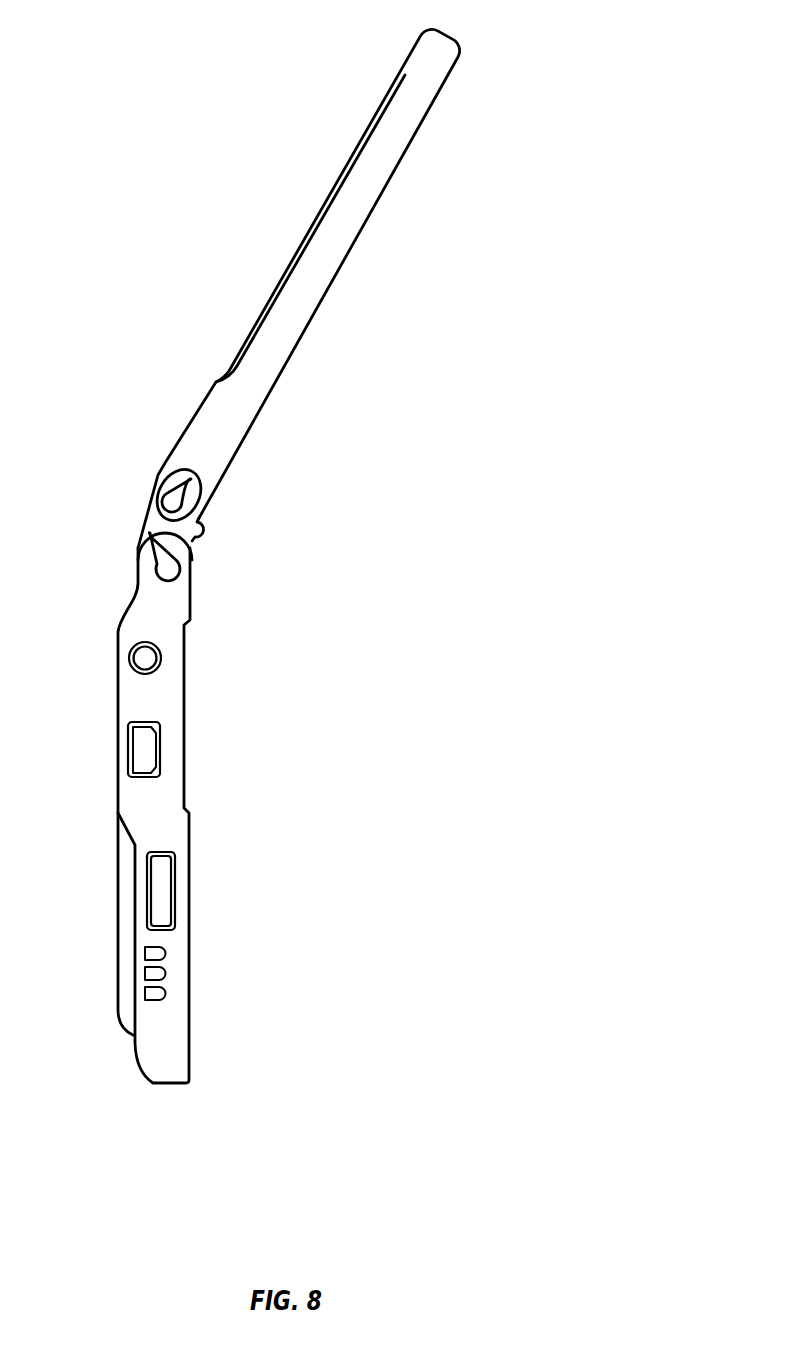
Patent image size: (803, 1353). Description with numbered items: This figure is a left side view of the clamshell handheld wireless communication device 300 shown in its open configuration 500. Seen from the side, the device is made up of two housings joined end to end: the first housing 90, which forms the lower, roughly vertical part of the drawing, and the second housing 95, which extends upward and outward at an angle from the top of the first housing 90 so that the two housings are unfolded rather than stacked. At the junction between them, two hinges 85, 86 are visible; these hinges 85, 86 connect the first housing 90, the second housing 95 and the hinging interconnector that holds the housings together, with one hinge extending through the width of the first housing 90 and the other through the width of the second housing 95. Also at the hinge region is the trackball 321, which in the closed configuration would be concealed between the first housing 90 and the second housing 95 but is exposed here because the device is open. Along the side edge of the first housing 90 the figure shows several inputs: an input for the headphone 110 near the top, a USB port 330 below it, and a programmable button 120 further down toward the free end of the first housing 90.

The clamshell handheld wireless communication device 300 is at (331, 570).
The open configuration 500 is at (378, 278).
The second housing 95 is at (441, 56).
The hinge 85 is at (177, 502).
The hinge 86 is at (163, 554).
The trackball 321 is at (208, 532).
The input for the headphone 110 is at (146, 657).
The USB port 330 is at (146, 747).
The programmable button 120 is at (162, 877).
The first housing 90 is at (161, 1069).